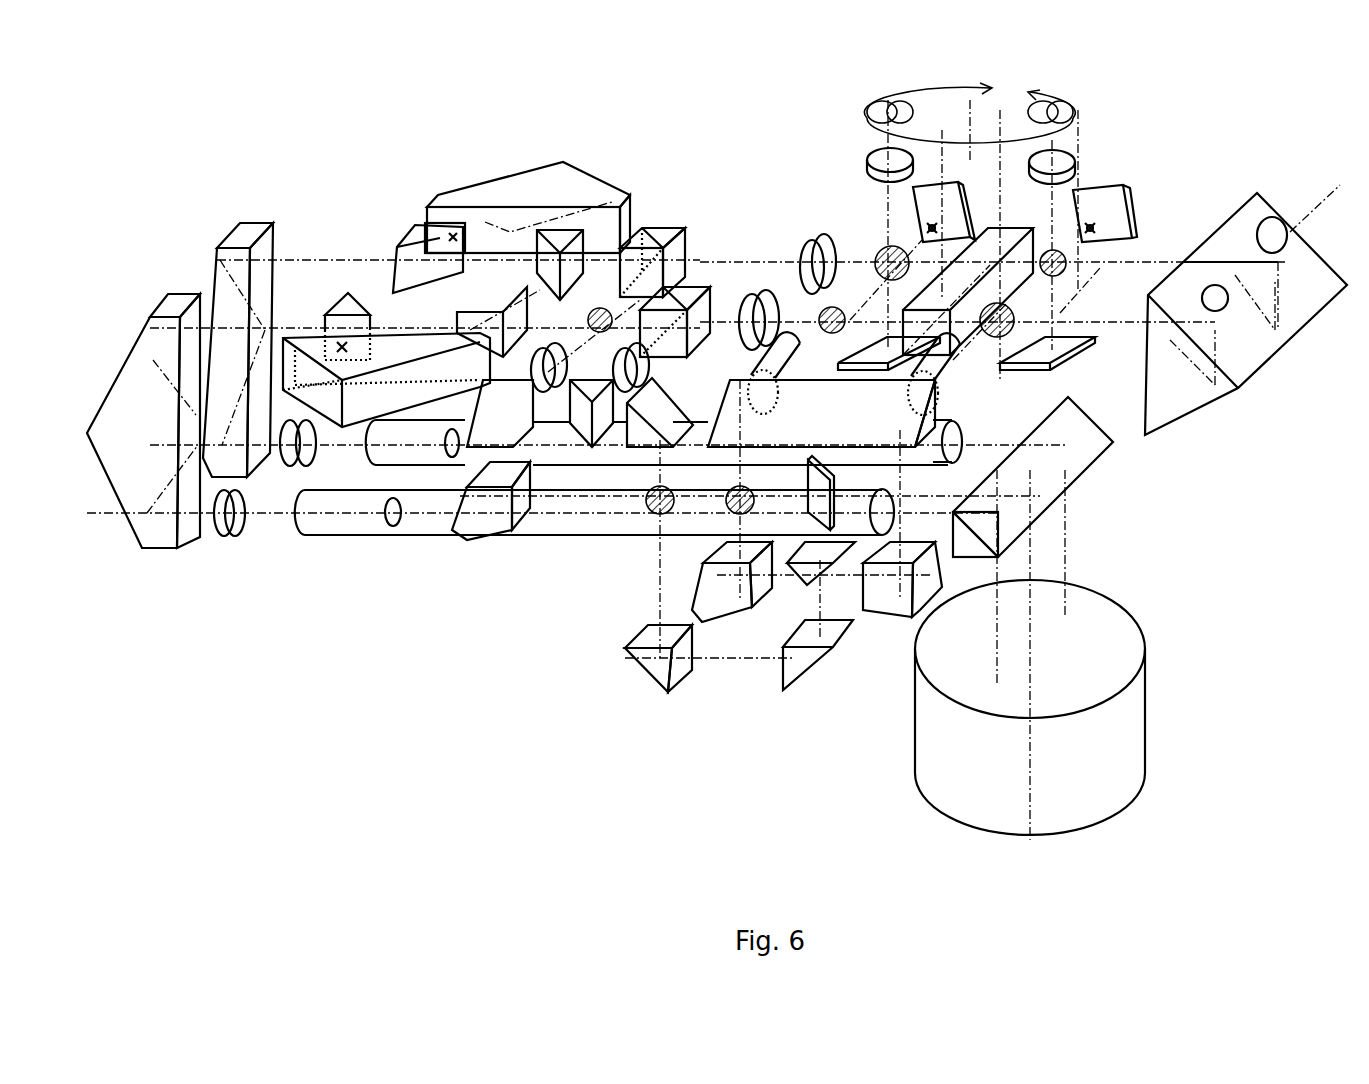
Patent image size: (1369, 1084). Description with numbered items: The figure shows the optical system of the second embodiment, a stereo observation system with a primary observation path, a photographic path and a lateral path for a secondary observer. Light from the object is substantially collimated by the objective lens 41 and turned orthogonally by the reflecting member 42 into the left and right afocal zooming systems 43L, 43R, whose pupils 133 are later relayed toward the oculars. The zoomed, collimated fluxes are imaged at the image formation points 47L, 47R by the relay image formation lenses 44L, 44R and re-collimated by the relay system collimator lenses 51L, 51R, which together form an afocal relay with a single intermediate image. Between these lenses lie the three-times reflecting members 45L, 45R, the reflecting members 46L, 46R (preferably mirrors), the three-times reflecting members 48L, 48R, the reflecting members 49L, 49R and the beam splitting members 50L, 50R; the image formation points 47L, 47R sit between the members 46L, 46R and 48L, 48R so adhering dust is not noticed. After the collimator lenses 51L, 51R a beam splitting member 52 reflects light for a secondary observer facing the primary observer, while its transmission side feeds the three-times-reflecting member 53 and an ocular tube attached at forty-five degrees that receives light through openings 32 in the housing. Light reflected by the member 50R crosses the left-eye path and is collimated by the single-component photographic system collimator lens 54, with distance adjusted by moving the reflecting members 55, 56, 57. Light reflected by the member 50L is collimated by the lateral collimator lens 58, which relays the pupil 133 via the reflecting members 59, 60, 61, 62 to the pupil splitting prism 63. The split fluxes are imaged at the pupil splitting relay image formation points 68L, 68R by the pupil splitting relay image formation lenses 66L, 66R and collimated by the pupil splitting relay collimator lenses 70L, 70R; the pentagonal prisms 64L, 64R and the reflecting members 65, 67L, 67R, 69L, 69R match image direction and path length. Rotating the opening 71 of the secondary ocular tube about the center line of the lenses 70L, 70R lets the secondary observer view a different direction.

The openings 32 is at (1275, 252).
The objective lens 41 is at (1117, 728).
The reflecting member 42 is at (1007, 533).
The left afocal zooming system 43L is at (330, 537).
The right afocal zooming system 43R is at (947, 455).
The left relay image formation lens 44L is at (221, 533).
The right relay image formation lens 44R is at (288, 467).
The left three-times reflecting member 45L is at (133, 512).
The right three-times reflecting member 45R is at (210, 285).
The left reflecting member 46L is at (356, 298).
The right reflecting member 46R is at (417, 227).
The left image formation point 47L is at (332, 333).
The right image formation point 47R is at (453, 230).
The left three-times reflecting member 48L is at (335, 420).
The right three-times reflecting member 48R is at (547, 180).
The left reflecting member 49L is at (498, 305).
The right reflecting member 49R is at (567, 235).
The left beam splitting member 50L is at (688, 293).
The right beam splitting member 50R is at (665, 240).
The left relay system collimator lens 51L is at (755, 297).
The right relay system collimator lens 51R is at (806, 245).
The beam splitting member 52 is at (1003, 303).
The three-times-reflecting member 53 is at (1192, 410).
The photographic system collimator lens 54 is at (542, 392).
The reflecting member 55 is at (448, 457).
The reflecting member 56 is at (462, 497).
The reflecting member 57 is at (810, 512).
The lateral collimator lens 58 is at (592, 432).
The reflecting member 59 is at (615, 392).
The reflecting member 60 is at (645, 447).
The reflecting member 61 is at (633, 660).
The reflecting member 62 is at (797, 660).
The pupil splitting prism 63 is at (822, 572).
The left pentagonal prism 64L is at (727, 620).
The right pentagonal prism 64R is at (907, 612).
The reflecting member 65 is at (977, 473).
The left pupil splitting relay image formation lens 66L is at (800, 345).
The right pupil splitting relay image formation lens 66R is at (950, 387).
The left reflecting member 67L is at (953, 193).
The right reflecting member 67R is at (1132, 212).
The left pupil splitting relay image formation point 68L is at (934, 230).
The right pupil splitting relay image formation point 68R is at (1093, 228).
The left reflecting member 69L is at (872, 347).
The right reflecting member 69R is at (1058, 362).
The left pupil splitting relay collimator lens 70L is at (873, 160).
The right pupil splitting relay collimator lens 70R is at (1065, 157).
The opening of the secondary ocular tube optical system 71 is at (1063, 103).
The pupils of the afocal zooming systems 133 is at (395, 525).